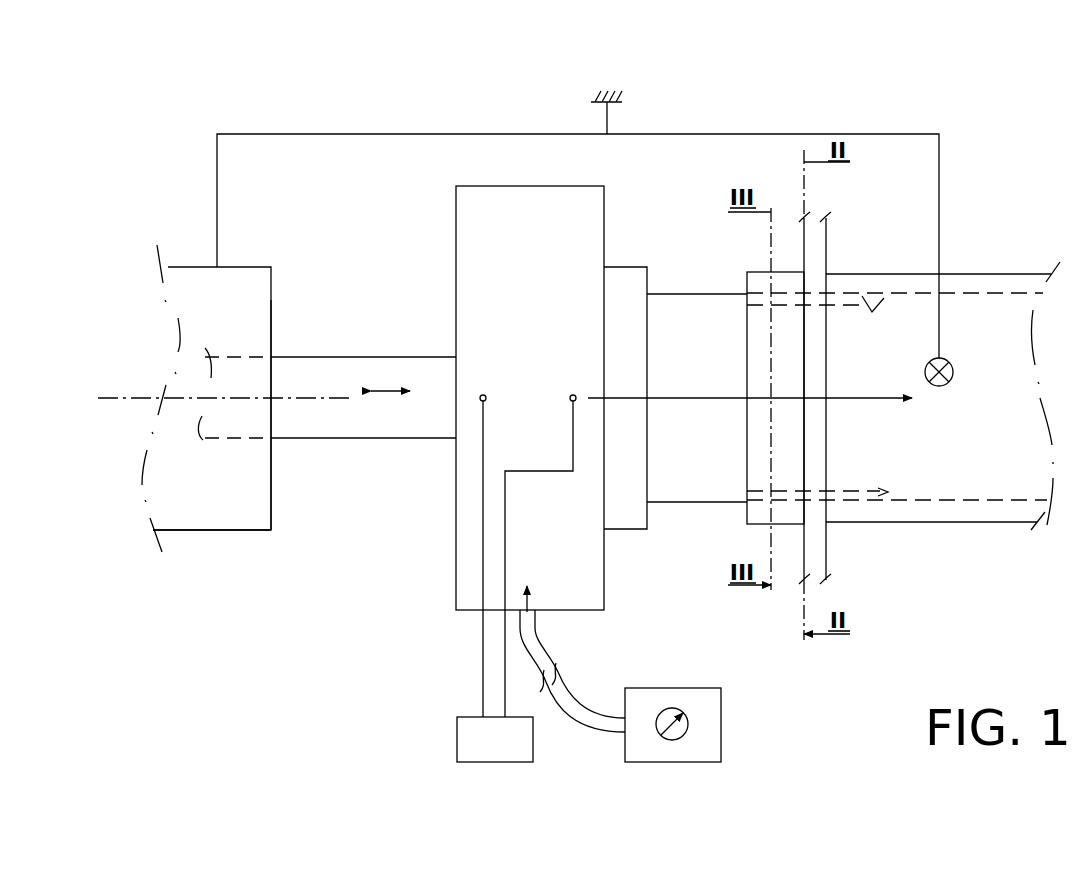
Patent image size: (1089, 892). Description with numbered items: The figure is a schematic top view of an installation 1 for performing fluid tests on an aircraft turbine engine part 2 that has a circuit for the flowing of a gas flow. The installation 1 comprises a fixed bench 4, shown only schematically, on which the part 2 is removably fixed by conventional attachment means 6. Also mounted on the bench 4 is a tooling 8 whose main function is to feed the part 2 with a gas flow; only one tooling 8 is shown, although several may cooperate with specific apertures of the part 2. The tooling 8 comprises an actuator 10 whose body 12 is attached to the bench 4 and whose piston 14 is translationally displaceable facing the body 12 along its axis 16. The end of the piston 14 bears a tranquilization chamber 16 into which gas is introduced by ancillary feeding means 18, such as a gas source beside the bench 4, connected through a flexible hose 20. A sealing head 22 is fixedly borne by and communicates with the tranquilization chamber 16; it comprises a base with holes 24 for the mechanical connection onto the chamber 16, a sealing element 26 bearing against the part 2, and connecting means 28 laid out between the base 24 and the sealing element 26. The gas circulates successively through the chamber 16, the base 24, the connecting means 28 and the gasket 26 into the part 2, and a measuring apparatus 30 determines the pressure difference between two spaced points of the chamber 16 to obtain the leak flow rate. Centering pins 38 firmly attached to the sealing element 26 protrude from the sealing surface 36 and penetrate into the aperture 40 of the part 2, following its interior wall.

The installation 1 is at (990, 90).
The aircraft turbine engine part 2 is at (993, 274).
The fixed bench 4 is at (614, 120).
The attachment means 6 is at (953, 368).
The tooling 8 is at (178, 228).
The actuator 10 is at (262, 530).
The body 12 is at (228, 530).
The piston 14 is at (340, 357).
The tranquilization chamber 16 is at (456, 215).
The ancillary feeding means 18 is at (721, 752).
The flexible hose 20 is at (548, 640).
The sealing head 22 is at (680, 243).
The base with holes 24 is at (620, 275).
The sealing element 26 is at (787, 272).
The connecting means 28 is at (685, 300).
The measuring apparatus 30 is at (457, 748).
The sealing surface 36 is at (806, 283).
The centering pins 38 is at (848, 307).
The aperture 40 is at (875, 305).